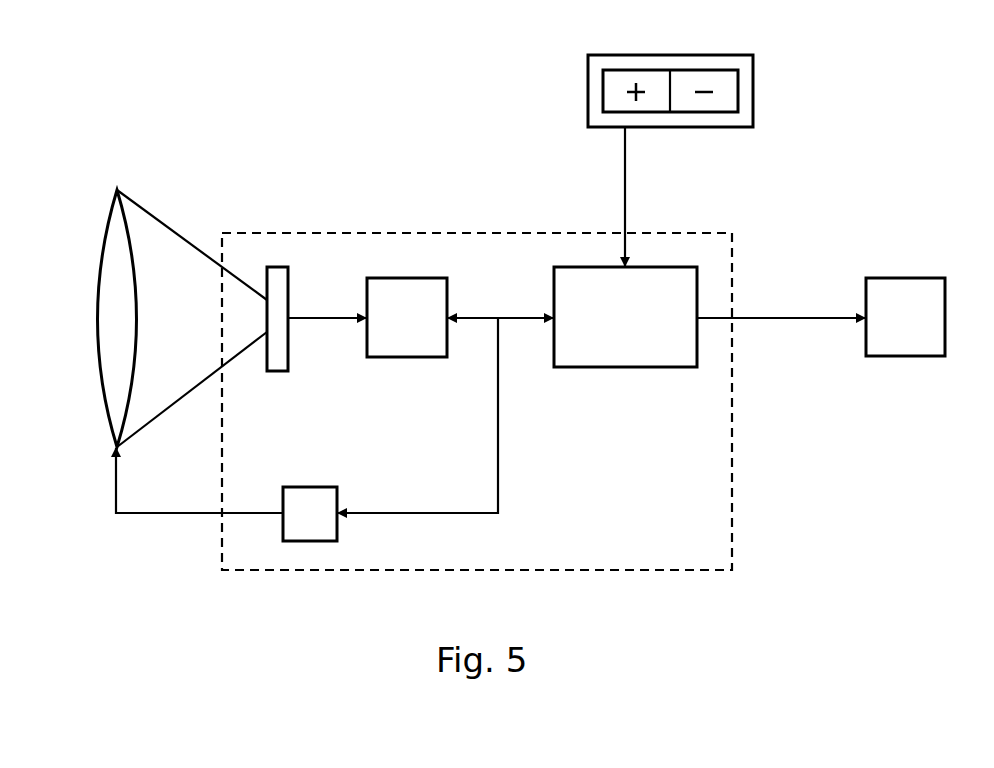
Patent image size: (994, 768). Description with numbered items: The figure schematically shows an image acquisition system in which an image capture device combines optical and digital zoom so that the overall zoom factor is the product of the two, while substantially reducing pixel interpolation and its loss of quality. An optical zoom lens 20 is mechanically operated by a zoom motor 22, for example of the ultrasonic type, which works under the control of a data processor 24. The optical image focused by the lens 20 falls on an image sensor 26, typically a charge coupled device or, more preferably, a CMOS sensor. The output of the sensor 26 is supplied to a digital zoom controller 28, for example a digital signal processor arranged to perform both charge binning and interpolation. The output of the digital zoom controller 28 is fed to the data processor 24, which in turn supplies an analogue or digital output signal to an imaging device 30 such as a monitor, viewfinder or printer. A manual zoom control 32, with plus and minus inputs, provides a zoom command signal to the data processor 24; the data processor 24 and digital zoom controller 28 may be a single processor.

The optical zoom lens 20 is at (100, 230).
The zoom motor 22 is at (312, 487).
The data processor 24 is at (620, 368).
The image sensor 26 is at (277, 263).
The digital zoom controller 28 is at (410, 357).
The imaging device 30 is at (905, 357).
The manual zoom control 32 is at (645, 55).